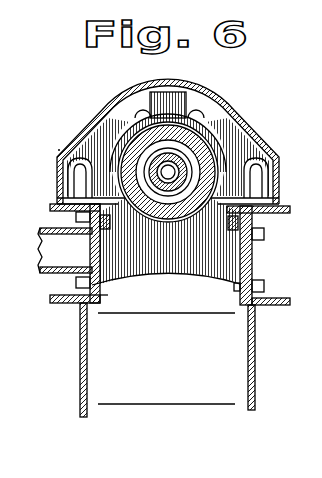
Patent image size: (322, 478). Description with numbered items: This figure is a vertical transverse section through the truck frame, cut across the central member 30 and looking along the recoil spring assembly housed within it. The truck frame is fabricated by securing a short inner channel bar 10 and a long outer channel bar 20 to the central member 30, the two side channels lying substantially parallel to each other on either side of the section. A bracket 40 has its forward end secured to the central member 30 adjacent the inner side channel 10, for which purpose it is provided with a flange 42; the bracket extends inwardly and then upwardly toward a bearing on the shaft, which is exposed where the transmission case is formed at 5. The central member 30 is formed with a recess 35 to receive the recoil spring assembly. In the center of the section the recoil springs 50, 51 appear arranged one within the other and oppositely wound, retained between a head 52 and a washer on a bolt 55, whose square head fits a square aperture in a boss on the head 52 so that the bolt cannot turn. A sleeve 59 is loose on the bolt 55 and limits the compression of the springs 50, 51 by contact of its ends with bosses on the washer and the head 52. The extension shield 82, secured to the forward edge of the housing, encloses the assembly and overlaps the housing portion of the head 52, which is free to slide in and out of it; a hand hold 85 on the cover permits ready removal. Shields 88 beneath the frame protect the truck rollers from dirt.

The formed portion of transmission case 5 is at (30, 134).
The short inner channel bar 10 is at (62, 206).
The long outer channel bar 20 is at (254, 258).
The central member 30 is at (175, 270).
The recess 35 is at (162, 230).
The bracket 40 is at (48, 257).
The flange 42 is at (108, 298).
The recoil spring 50 is at (133, 150).
The recoil spring 51 is at (265, 147).
The head 52 is at (208, 213).
The bolt 55 is at (162, 170).
The sleeve 59 is at (176, 167).
The extension shield 82 is at (118, 102).
The hand hold 85 is at (65, 158).
The shield 88 is at (82, 345).